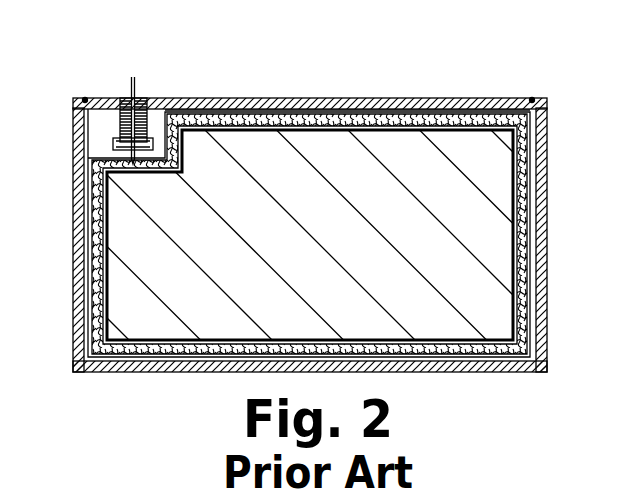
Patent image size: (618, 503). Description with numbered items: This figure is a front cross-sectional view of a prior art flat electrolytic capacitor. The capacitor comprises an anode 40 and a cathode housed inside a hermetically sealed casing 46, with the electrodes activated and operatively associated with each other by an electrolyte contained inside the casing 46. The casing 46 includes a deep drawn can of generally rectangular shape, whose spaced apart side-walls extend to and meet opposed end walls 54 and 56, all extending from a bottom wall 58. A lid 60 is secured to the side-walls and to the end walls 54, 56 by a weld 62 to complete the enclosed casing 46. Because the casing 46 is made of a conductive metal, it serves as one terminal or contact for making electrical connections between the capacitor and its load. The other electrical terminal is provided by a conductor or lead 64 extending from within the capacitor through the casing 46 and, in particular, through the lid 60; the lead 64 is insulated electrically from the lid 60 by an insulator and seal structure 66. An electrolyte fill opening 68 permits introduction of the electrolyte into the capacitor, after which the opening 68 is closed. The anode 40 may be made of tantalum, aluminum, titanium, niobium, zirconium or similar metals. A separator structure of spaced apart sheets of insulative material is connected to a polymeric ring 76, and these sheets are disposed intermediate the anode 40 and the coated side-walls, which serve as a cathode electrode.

The anode 40 is at (117, 263).
The casing 46 is at (76, 348).
The end wall 54 is at (540, 132).
The end wall 56 is at (75, 150).
The bottom wall 58 is at (524, 372).
The lid 60 is at (275, 97).
The weld 62 is at (531, 99).
The lead 64 is at (137, 95).
The insulator and seal structure 66 is at (127, 96).
The electrolyte fill opening 68 is at (502, 103).
The polymeric ring 76 is at (95, 262).